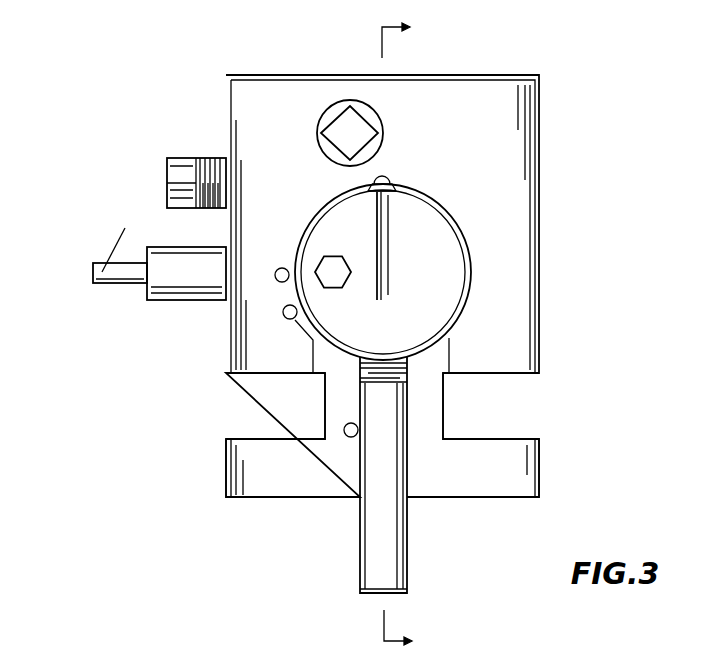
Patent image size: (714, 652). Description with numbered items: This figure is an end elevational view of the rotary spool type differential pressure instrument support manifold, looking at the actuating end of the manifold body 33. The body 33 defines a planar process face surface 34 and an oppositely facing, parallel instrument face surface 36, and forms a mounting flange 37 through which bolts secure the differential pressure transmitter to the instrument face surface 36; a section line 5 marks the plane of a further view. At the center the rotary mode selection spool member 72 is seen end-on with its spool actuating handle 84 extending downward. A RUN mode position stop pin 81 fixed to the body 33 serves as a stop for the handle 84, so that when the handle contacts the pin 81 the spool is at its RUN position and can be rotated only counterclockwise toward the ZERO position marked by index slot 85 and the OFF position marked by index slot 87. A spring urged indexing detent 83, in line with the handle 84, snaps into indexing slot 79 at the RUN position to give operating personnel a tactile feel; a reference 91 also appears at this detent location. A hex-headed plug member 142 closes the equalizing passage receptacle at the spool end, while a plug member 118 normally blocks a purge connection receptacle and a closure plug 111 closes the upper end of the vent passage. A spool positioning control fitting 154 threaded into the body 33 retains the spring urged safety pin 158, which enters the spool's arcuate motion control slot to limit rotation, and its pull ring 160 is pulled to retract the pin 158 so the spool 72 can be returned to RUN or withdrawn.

The manifold body 33 is at (485, 88).
The process face surface 34 is at (300, 75).
The instrument face surface 36 is at (293, 498).
The mounting flange 37 is at (517, 474).
The section line 5 is at (407, 337).
The plug member 118 is at (357, 126).
The mode selection spool member 72 is at (461, 281).
The indexing slot 79 is at (390, 180).
The detent base 91 is at (396, 190).
The spring urged indexing detent 83 is at (386, 192).
The plug member 142 is at (330, 268).
The index slot 85 is at (277, 277).
The index slot 87 is at (286, 320).
The RUN mode position stop pin 81 is at (344, 428).
The spool actuating handle 84 is at (392, 551).
The closure plug 111 is at (185, 168).
The spool positioning control fitting 154 is at (193, 283).
The positioning control pin 158 is at (122, 276).
The pull ring 160 is at (117, 233).